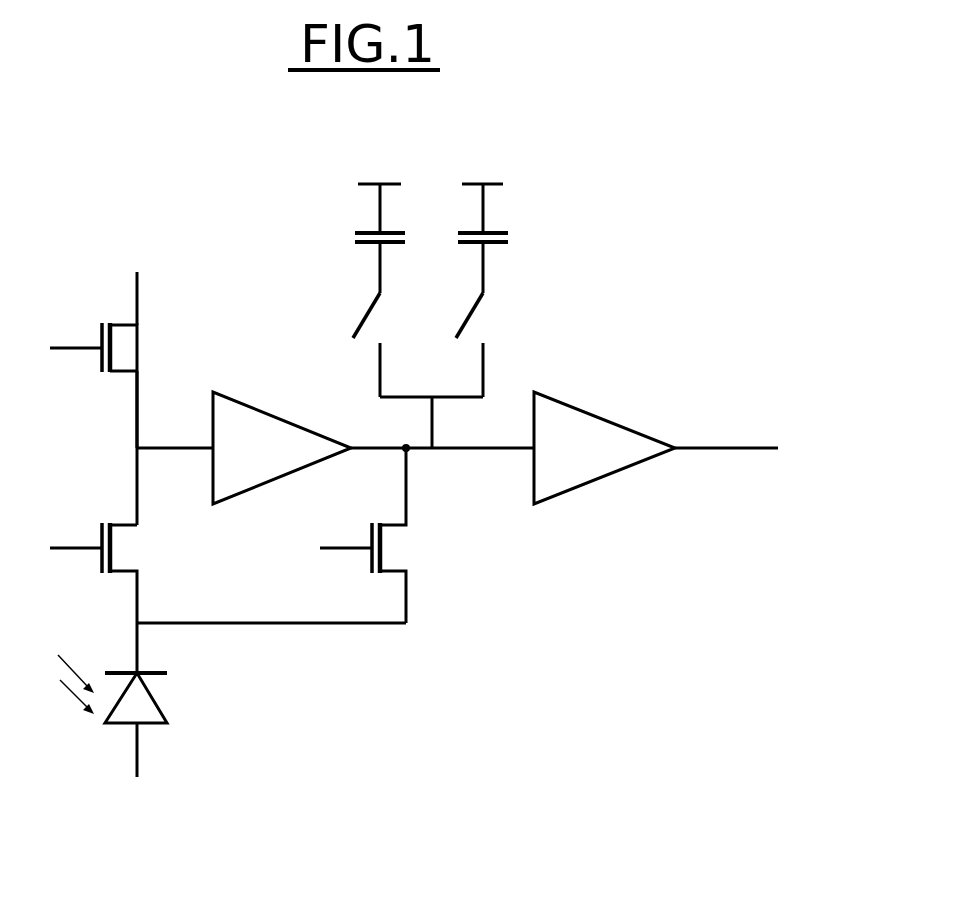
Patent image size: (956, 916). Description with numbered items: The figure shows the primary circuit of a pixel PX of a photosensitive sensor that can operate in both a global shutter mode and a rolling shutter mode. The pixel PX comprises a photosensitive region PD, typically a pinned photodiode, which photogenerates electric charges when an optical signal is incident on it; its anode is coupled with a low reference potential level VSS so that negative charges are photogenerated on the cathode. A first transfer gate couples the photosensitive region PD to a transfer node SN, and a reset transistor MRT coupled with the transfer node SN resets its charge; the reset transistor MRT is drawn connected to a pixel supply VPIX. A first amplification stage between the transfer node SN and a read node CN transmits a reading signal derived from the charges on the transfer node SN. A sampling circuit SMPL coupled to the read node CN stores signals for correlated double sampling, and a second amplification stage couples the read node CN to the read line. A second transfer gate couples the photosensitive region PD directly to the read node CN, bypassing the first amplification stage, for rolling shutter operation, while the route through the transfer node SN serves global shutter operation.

The pixel PX is at (690, 208).
The pixel supply voltage VPIX is at (133, 282).
The reset transistor MRT is at (121, 385).
The transfer node SN is at (150, 448).
The read node CN is at (446, 424).
The sampling circuit SMPL is at (528, 293).
The photosensitive region PD is at (132, 716).
The low reference potential level VSS is at (134, 795).